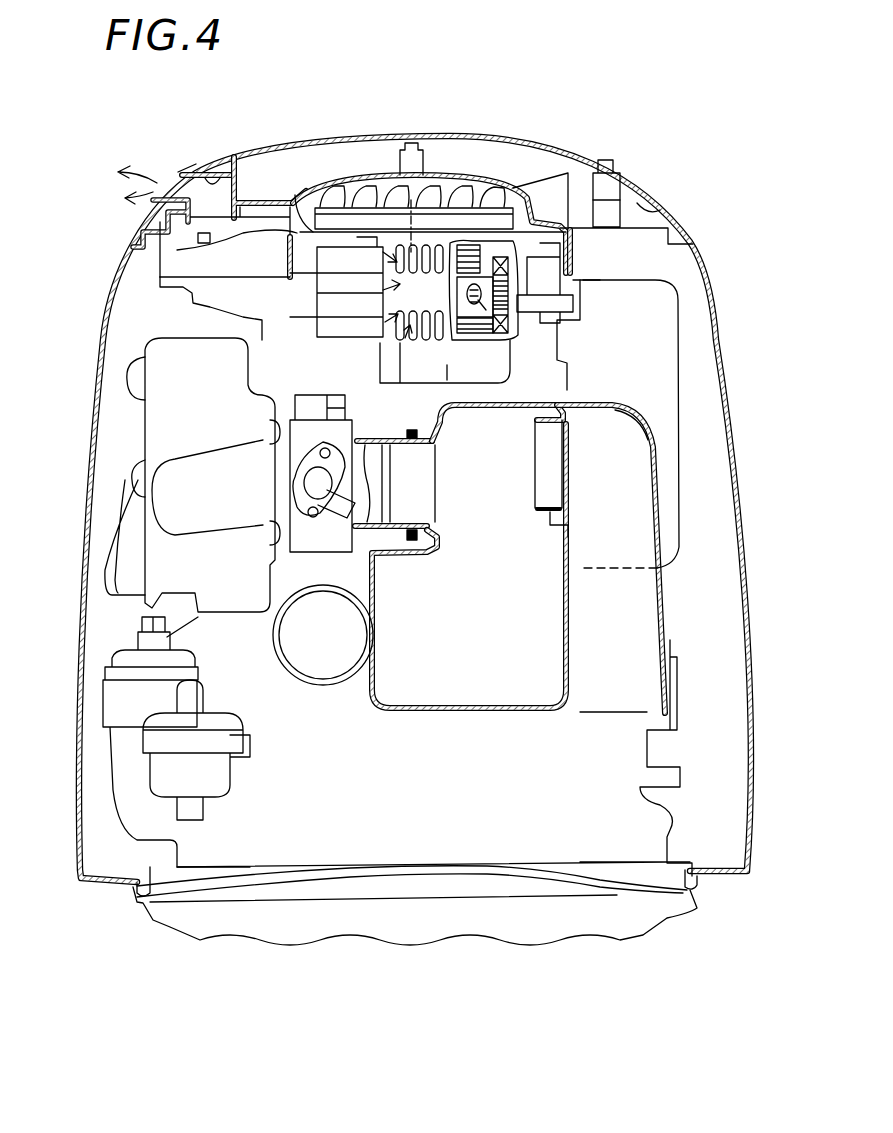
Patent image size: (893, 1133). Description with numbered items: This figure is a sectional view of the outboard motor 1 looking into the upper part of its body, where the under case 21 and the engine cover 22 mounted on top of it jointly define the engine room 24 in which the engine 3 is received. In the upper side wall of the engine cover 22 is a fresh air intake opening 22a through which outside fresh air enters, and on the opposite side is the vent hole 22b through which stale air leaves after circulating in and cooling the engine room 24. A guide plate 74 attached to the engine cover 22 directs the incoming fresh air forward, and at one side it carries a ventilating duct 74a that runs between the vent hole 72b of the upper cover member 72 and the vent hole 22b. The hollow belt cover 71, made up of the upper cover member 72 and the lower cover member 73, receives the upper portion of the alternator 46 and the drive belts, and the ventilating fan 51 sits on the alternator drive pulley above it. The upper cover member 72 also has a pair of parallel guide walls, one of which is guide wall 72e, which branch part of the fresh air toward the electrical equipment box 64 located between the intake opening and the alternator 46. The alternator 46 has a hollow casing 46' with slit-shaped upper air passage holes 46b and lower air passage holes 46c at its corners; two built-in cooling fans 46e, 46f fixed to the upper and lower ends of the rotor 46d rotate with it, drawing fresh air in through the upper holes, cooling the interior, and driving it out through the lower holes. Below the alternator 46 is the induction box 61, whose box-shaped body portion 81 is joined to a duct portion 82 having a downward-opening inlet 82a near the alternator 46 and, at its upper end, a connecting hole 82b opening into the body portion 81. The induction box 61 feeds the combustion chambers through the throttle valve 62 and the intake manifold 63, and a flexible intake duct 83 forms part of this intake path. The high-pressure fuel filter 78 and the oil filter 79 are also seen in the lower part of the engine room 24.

The outboard motor 1 is at (715, 135).
The engine 3 is at (500, 830).
The under case 21 is at (750, 833).
The engine cover 22 is at (763, 640).
The fresh air intake opening 22a is at (650, 213).
The vent hole 22b is at (170, 180).
The engine room 24 is at (710, 580).
The alternator 46 is at (475, 313).
The upper air passage holes 46b is at (378, 275).
The lower air passage holes 46c is at (377, 315).
The rotor 46d is at (480, 340).
The cooling fan 46e is at (573, 243).
The cooling fan 46f is at (488, 340).
The casing 46' is at (416, 395).
The ventilating fan 51 is at (480, 193).
The induction box 61 is at (433, 713).
The throttle valve 62 is at (313, 533).
The intake manifold 63 is at (145, 437).
The electrical equipment box 64 is at (700, 390).
The belt cover 71 is at (490, 172).
The upper cover member 72 is at (517, 180).
The vent hole 72b is at (212, 217).
The guide wall 72e is at (568, 173).
The lower cover member 73 is at (160, 283).
The guide plate 74 is at (278, 197).
The ventilating duct 74a is at (205, 160).
The high-pressure fuel filter 78 is at (223, 777).
The oil filter 79 is at (333, 686).
The body portion 81 is at (473, 713).
The duct portion 82 is at (663, 612).
The inlet 82a is at (640, 712).
The connecting hole 82b is at (537, 490).
The flexible intake duct 83 is at (397, 536).